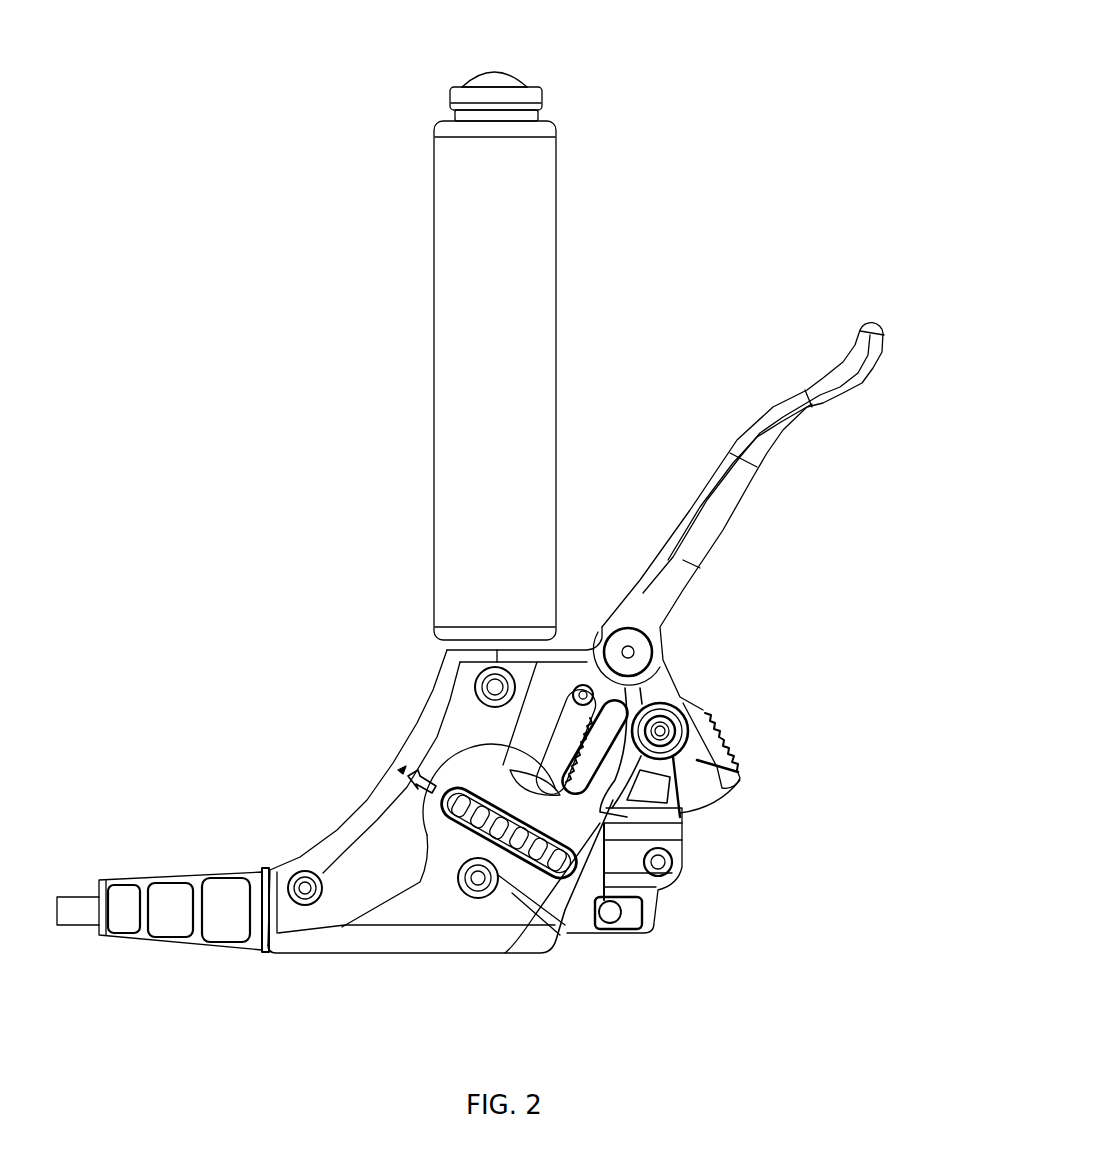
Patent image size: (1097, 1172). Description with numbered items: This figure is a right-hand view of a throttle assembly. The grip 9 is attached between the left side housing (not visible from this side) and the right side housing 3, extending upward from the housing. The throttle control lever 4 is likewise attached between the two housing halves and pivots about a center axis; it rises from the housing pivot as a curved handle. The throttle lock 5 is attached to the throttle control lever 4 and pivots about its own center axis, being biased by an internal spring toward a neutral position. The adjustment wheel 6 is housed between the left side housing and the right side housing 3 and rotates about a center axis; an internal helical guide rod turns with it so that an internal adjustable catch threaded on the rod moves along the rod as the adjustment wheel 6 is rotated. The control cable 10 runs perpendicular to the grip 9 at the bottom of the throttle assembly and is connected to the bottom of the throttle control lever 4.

The right side housing 3 is at (425, 735).
The throttle control lever 4 is at (857, 383).
The throttle lock 5 is at (740, 754).
The adjustment wheel 6 is at (508, 955).
The grip 9 is at (438, 121).
The control cable 10 is at (613, 936).